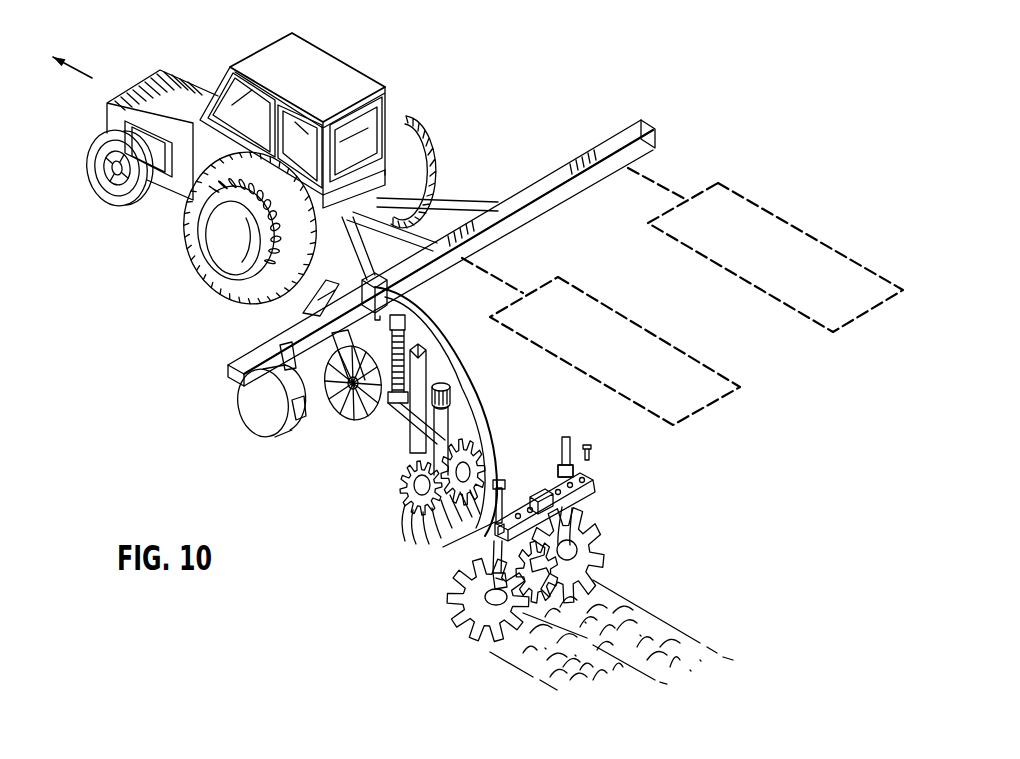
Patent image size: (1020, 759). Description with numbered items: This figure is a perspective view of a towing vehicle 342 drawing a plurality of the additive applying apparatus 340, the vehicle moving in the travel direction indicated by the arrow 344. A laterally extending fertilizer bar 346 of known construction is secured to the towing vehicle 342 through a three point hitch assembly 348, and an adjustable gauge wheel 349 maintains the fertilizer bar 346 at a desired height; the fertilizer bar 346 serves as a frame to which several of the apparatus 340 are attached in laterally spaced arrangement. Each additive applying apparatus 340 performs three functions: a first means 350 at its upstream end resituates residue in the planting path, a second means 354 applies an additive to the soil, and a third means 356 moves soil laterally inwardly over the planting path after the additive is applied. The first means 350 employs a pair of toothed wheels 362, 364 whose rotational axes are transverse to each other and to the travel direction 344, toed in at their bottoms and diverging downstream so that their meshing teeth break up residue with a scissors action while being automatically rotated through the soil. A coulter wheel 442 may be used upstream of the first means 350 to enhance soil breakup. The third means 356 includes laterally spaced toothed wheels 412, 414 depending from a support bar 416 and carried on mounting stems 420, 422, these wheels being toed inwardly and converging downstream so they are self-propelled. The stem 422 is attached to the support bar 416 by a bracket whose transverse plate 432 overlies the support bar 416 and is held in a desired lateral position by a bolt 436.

The travel direction arrow 344 is at (83, 76).
The towing vehicle 342 is at (178, 186).
The three point hitch assembly 348 is at (414, 150).
The fertilizer bar 346 is at (543, 181).
The additive applying apparatus 340 is at (771, 258).
The adjustable gauge wheel 349 is at (257, 418).
The coulter wheel 442 is at (348, 420).
The first means 350 is at (388, 454).
The toothed wheel 364 is at (398, 485).
The toothed wheel 362 is at (464, 443).
The transverse plate 432 is at (465, 537).
The second means 354 is at (532, 472).
The bolt 436 is at (593, 448).
The support bar 416 is at (568, 507).
The mounting stem 420 is at (582, 529).
The toothed wheel 412 is at (598, 560).
The mounting stem 422 is at (485, 556).
The third means 356 is at (445, 598).
The toothed wheel 414 is at (485, 617).